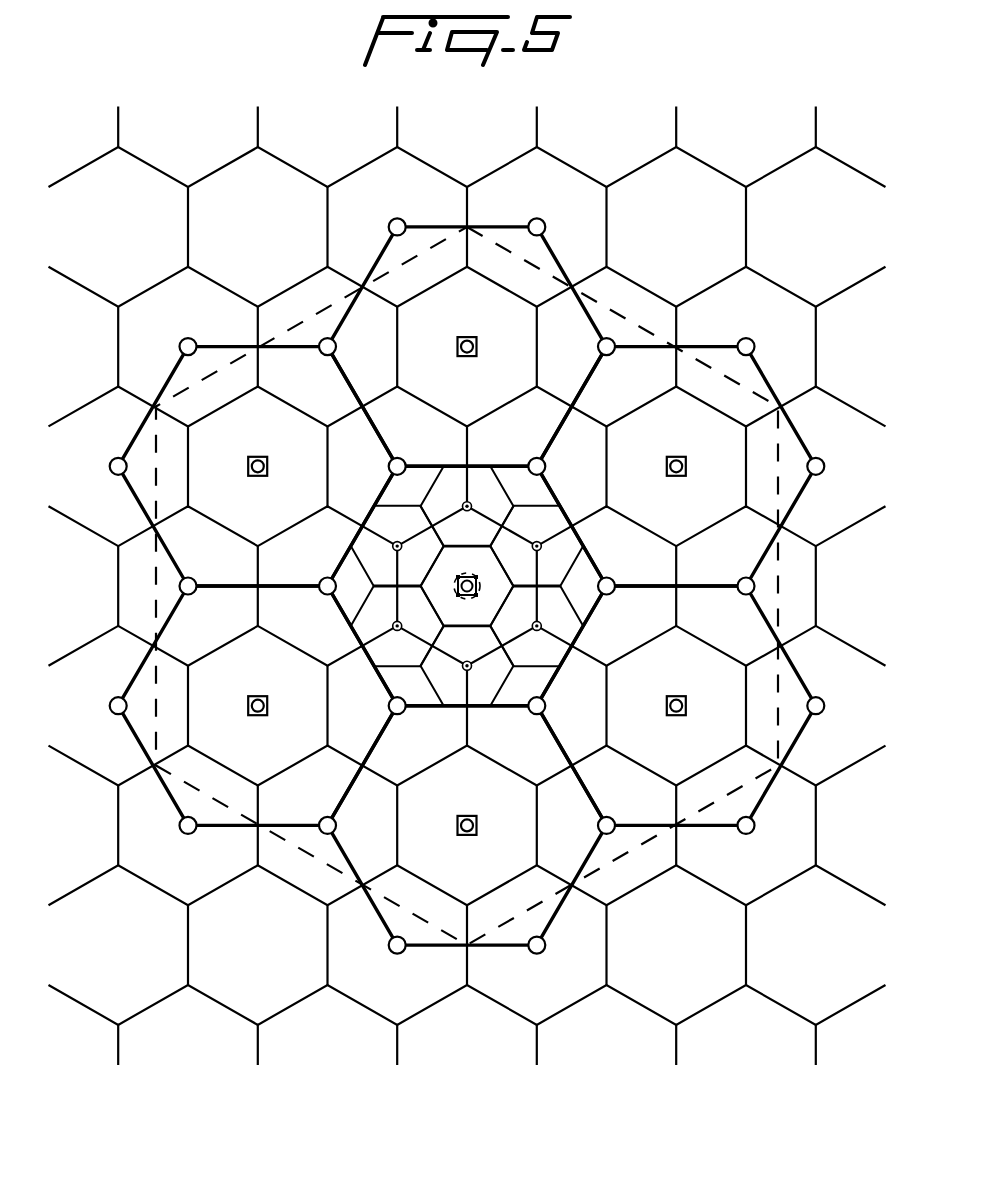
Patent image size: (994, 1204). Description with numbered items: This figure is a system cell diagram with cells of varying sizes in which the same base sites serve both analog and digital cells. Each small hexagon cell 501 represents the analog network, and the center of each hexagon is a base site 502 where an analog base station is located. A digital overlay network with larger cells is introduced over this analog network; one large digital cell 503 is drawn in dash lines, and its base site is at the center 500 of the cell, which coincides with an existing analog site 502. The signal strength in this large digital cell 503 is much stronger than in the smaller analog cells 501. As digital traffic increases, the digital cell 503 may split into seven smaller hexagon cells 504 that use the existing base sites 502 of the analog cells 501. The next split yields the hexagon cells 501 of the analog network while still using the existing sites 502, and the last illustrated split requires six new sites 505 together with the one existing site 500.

The center of the digital cell 500 is at (479, 587).
The hexagon cell 501 is at (762, 879).
The base site 502 is at (825, 466).
The digital cell 503 is at (783, 580).
The smaller hexagon cell 504 is at (168, 796).
The new site 505 is at (479, 674).